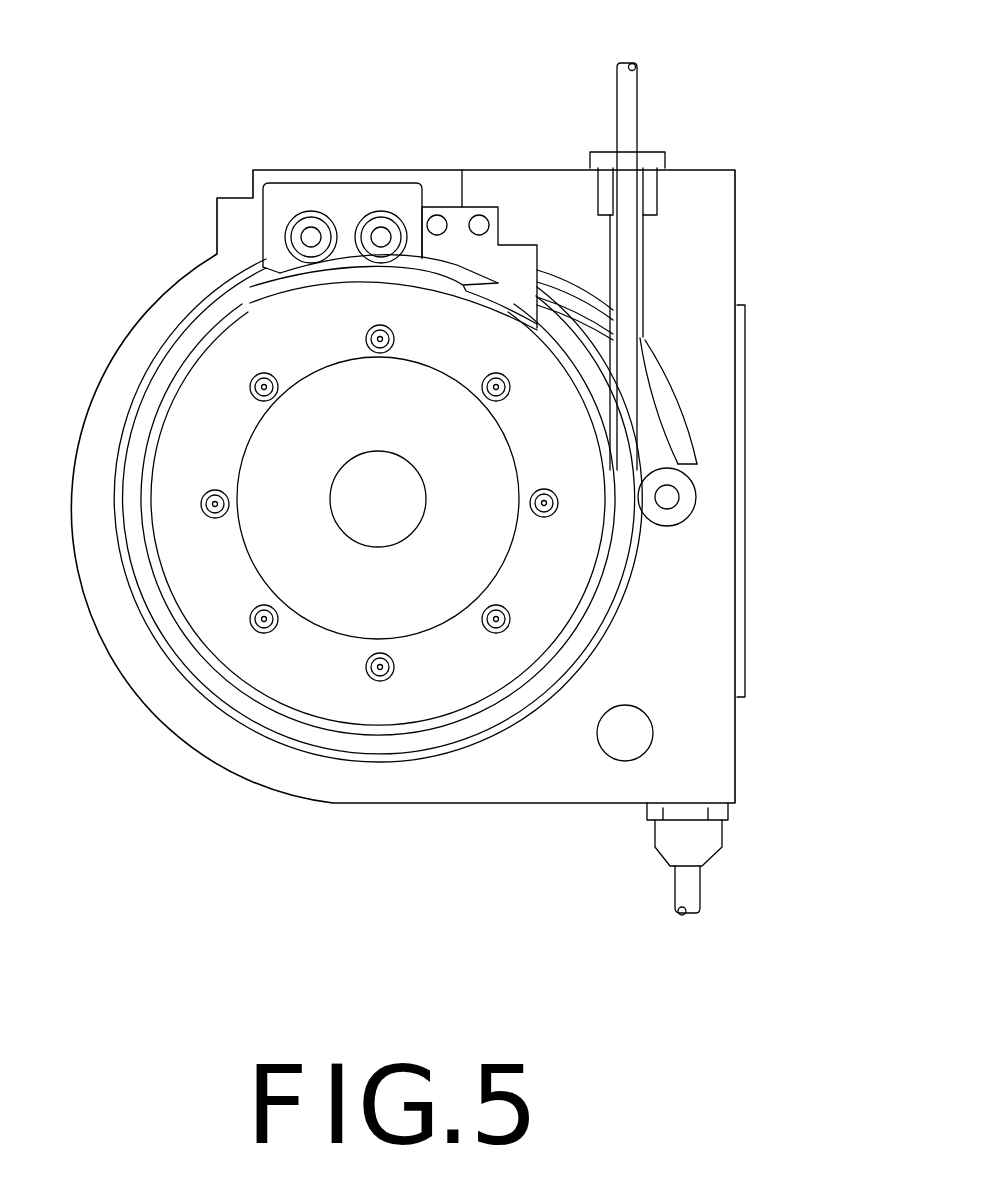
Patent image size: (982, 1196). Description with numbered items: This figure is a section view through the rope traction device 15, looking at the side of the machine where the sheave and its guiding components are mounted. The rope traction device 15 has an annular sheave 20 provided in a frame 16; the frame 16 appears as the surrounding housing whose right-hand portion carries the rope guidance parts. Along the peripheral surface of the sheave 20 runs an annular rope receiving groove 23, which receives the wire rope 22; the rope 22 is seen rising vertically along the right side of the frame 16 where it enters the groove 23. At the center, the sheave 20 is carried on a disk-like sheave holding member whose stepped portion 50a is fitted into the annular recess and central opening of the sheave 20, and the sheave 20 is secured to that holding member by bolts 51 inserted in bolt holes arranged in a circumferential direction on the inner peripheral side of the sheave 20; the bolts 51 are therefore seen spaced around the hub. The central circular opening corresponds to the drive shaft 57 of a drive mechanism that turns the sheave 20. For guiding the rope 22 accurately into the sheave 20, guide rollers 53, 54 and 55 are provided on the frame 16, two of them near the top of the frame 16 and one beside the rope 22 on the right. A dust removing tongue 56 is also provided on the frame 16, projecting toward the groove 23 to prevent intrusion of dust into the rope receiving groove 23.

The rope traction device 15 is at (505, 117).
The frame 16 is at (712, 272).
The annular sheave 20 is at (448, 693).
The wire rope 22 is at (638, 108).
The annular rope receiving groove 23 is at (580, 368).
The stepped portion 50a is at (327, 617).
The bolts 51 is at (373, 682).
The guide roller 53 is at (698, 502).
The guide roller 54 is at (312, 211).
The guide roller 55 is at (382, 211).
The dust removing tongue 56 is at (513, 287).
The drive shaft 57 is at (350, 523).